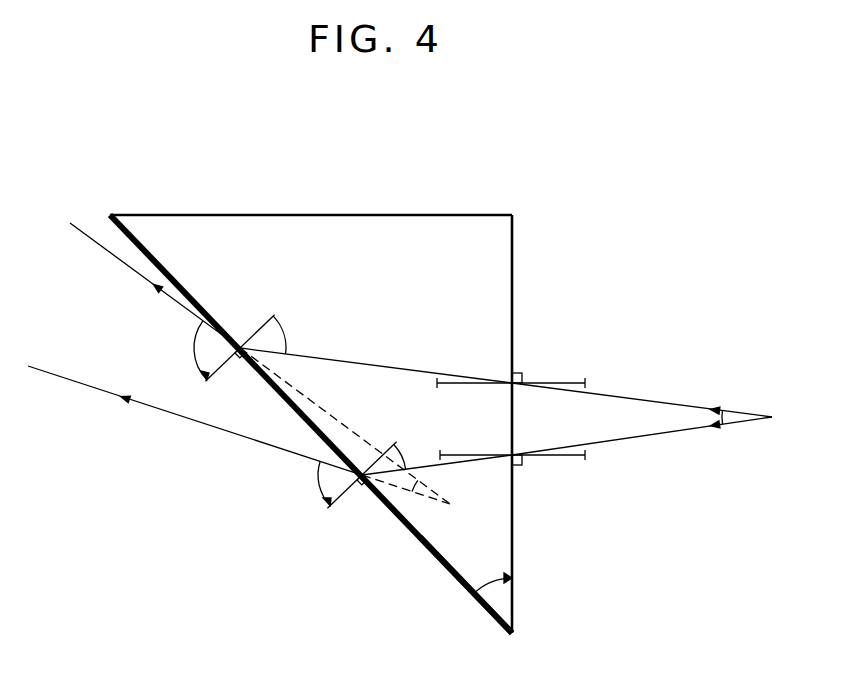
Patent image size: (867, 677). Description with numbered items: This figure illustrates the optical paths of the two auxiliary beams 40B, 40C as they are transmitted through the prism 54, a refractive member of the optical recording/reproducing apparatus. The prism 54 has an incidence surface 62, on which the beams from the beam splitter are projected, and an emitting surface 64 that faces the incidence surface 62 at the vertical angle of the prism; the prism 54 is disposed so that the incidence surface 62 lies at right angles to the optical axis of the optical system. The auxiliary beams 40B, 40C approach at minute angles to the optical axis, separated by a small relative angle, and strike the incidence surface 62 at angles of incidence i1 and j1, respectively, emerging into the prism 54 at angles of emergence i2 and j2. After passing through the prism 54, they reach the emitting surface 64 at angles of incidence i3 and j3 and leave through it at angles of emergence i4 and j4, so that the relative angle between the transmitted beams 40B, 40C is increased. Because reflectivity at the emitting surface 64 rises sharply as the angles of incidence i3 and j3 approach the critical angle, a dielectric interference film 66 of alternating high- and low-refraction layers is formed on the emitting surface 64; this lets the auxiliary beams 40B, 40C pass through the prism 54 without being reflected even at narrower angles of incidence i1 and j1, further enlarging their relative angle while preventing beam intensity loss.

The prism 54 is at (444, 215).
The incidence surface 62 is at (512, 282).
The emitting surface 64 is at (430, 550).
The dielectric interference film 66 is at (483, 603).
The auxiliary beam 40B is at (682, 407).
The auxiliary beam 40C is at (682, 435).
The angle of incidence i1 is at (585, 383).
The angle of emergence i2 is at (437, 383).
The angle of incidence i3 is at (280, 326).
The angle of emergence i4 is at (201, 352).
The angle of incidence j1 is at (585, 455).
The angle of emergence j2 is at (440, 455).
The angle of incidence j3 is at (407, 446).
The angle of emergence j4 is at (326, 492).